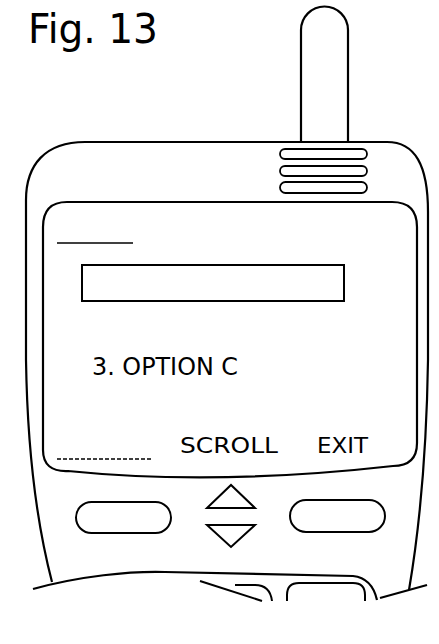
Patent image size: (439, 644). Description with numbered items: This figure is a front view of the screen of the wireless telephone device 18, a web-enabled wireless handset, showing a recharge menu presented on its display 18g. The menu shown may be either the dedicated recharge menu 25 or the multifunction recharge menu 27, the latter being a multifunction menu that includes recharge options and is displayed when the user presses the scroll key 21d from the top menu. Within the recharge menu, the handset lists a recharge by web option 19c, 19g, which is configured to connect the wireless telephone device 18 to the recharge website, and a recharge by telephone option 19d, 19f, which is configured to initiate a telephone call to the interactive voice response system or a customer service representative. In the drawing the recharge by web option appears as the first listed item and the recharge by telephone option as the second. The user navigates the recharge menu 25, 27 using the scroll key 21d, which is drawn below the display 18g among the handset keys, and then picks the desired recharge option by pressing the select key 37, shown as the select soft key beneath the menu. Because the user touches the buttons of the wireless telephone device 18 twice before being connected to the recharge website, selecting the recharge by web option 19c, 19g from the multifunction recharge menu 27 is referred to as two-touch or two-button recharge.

The wireless telephone device 18 is at (131, 141).
The display 18g is at (76, 202).
The dedicated recharge menu 25 is at (135, 202).
The multifunction recharge menu 27 is at (144, 230).
The recharge by web option 19c is at (236, 264).
The recharge by web option 19g is at (391, 252).
The recharge by telephone option 19d is at (239, 344).
The recharge by telephone option 19f is at (386, 377).
The select key 37 is at (160, 441).
The scroll key 21d is at (321, 569).